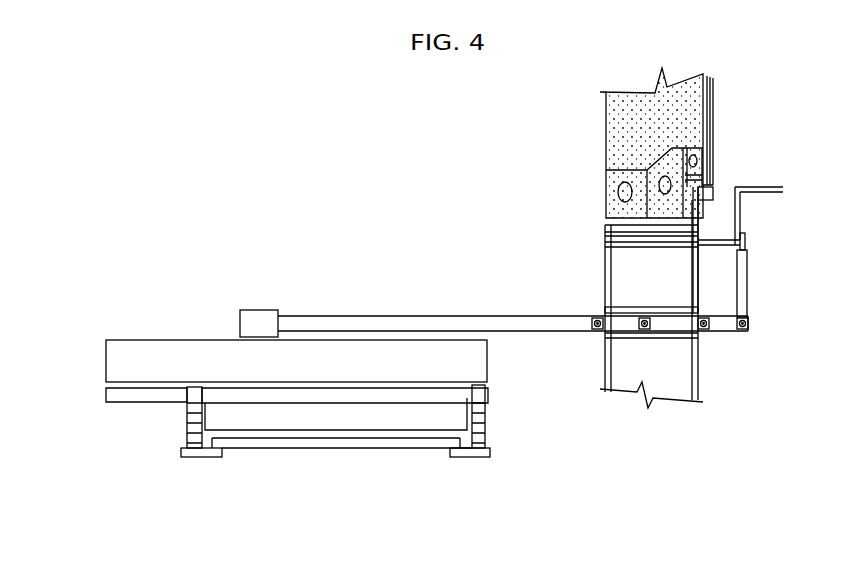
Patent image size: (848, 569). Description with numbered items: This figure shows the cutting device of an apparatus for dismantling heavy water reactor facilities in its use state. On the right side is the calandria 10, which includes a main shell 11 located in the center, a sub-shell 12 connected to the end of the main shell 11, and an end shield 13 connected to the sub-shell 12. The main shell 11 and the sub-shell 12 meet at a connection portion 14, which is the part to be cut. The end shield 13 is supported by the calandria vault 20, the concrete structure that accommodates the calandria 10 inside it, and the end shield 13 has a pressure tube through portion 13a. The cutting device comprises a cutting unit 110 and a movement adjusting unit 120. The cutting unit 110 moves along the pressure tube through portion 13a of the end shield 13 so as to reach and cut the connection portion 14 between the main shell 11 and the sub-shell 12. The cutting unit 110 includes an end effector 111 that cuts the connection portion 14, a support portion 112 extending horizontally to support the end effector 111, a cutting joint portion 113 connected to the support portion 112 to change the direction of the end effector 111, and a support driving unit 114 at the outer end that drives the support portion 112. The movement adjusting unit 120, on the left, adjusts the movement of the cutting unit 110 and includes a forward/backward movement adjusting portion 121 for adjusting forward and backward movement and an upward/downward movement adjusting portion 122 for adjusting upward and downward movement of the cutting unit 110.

The calandria 10 is at (797, 126).
The main shell 11 is at (770, 187).
The sub-shell 12 is at (718, 242).
The connection portion 14 is at (742, 213).
The calandria vault 20 is at (607, 122).
The end shield 13 is at (608, 363).
The pressure tube through portion 13a is at (645, 308).
The cutting unit 110 is at (775, 508).
The end effector 111 is at (747, 248).
The support portion 112 is at (523, 327).
The cutting joint portion 113 is at (742, 331).
The support driving unit 114 is at (260, 335).
The movement adjusting unit 120 is at (490, 258).
The forward/backward movement adjusting portion 121 is at (417, 340).
The upward/downward movement adjusting portion 122 is at (477, 387).